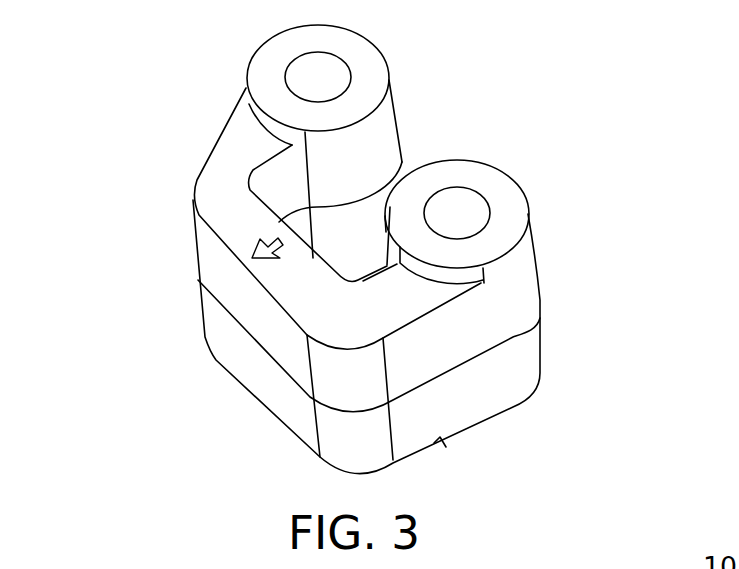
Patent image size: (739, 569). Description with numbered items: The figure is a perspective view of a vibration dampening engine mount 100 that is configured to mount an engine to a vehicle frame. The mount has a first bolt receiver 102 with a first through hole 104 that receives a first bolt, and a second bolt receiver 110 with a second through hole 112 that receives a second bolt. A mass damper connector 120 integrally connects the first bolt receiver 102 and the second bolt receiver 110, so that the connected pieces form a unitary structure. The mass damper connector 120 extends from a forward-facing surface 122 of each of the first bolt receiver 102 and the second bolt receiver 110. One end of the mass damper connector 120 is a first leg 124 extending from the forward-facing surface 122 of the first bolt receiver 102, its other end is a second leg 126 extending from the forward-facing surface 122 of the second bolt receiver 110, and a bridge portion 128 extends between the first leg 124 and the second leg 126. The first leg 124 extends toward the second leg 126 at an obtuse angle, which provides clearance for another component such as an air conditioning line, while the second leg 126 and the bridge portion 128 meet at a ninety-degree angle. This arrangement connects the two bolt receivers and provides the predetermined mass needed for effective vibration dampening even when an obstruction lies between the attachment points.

The vibration dampening engine mount 100 is at (119, 48).
The first bolt receiver 102 is at (373, 88).
The first through hole 104 is at (318, 72).
The second bolt receiver 110 is at (508, 217).
The second through hole 112 is at (465, 203).
The mass damper connector 120 is at (232, 283).
The forward-facing surface 122 is at (247, 101).
The first leg 124 is at (223, 172).
The second leg 126 is at (408, 300).
The bridge portion 128 is at (307, 302).